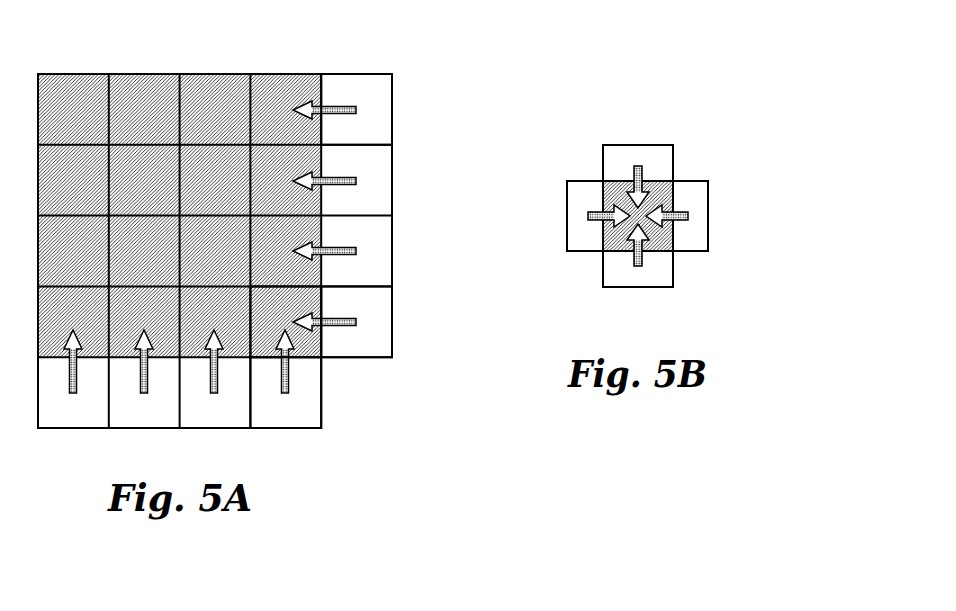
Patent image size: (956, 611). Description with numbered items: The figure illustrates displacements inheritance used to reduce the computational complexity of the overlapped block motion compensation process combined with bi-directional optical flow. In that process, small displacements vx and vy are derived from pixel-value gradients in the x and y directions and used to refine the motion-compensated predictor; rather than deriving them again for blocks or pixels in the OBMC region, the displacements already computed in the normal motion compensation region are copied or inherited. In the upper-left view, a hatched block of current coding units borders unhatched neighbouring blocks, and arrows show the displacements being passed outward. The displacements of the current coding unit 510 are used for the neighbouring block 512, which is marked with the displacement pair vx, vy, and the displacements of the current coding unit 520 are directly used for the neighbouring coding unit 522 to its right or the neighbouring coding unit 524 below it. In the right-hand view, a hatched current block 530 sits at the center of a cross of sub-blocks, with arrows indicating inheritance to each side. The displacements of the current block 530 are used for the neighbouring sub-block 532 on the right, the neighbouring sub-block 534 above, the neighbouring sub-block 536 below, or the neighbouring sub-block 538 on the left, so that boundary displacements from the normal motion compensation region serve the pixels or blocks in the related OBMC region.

In FIG. 5A, the current coding unit 510 is at (285, 96).
In FIG. 5A, the neighbouring block 512 is at (373, 123).
In FIG. 5A, the current coding unit 520 is at (293, 303).
In FIG. 5A, the neighbouring coding unit 522 is at (373, 343).
In FIG. 5A, the neighbouring coding unit 524 is at (302, 405).
In FIG. 5B, the current block 530 is at (660, 198).
In FIG. 5B, the neighbouring sub-block 532 is at (696, 207).
In FIG. 5B, the neighbouring sub-block 534 is at (643, 157).
In FIG. 5B, the neighbouring sub-block 536 is at (646, 273).
In FIG. 5B, the neighbouring sub-block 538 is at (585, 203).